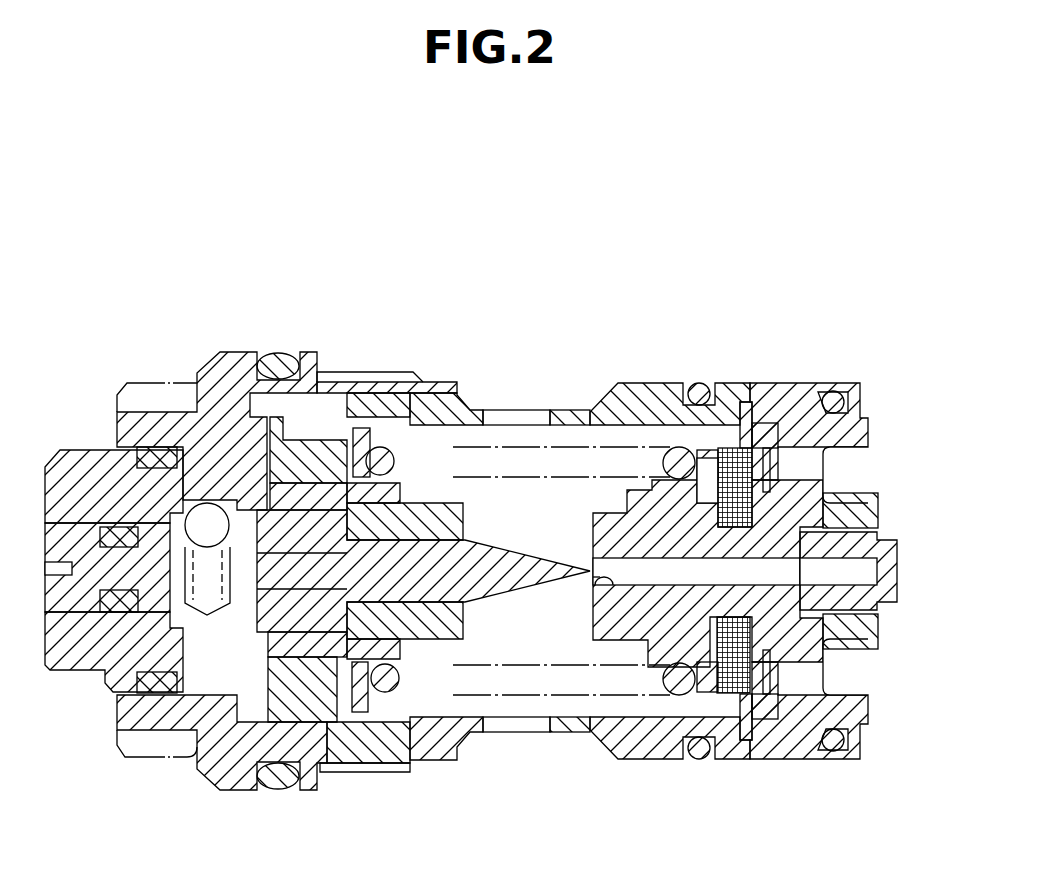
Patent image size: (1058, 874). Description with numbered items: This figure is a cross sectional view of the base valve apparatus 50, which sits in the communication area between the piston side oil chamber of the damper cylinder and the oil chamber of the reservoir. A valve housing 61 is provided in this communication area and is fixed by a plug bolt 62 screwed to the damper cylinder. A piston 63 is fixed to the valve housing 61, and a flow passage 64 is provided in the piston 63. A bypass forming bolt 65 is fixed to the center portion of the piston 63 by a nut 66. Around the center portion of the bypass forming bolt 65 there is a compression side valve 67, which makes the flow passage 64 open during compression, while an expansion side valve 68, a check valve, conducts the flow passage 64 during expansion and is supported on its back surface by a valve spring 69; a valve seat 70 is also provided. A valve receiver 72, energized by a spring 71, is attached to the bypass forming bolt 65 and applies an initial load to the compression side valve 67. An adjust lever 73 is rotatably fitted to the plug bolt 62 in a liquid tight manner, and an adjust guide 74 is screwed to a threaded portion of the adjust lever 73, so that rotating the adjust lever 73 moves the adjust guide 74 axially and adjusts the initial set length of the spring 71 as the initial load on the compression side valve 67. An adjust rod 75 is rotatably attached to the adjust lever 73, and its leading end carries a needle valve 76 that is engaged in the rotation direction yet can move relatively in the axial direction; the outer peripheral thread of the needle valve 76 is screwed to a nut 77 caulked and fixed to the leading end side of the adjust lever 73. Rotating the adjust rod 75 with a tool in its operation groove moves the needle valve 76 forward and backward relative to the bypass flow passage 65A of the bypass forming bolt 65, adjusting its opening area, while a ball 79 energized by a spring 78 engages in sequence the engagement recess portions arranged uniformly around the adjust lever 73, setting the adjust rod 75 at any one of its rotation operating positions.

The base valve apparatus 50 is at (236, 290).
The valve housing 61 is at (623, 740).
The plug bolt 62 is at (237, 763).
The piston 63 is at (797, 437).
The flow passage 64 is at (797, 677).
The bypass forming bolt 65 is at (613, 523).
The bypass flow passage 65A is at (594, 582).
The nut 66 is at (868, 487).
The compression side valve 67 is at (672, 738).
The expansion side valve 68 is at (760, 740).
The valve spring 69 is at (778, 742).
The valve seat 70 is at (745, 742).
The spring 71 is at (662, 447).
The valve receiver 72 is at (708, 440).
The adjust lever 73 is at (67, 653).
The adjust guide 74 is at (323, 700).
The adjust rod 75 is at (72, 548).
The needle valve 76 is at (488, 577).
The nut 77 is at (447, 510).
The spring 78 is at (172, 615).
The ball 79 is at (210, 530).